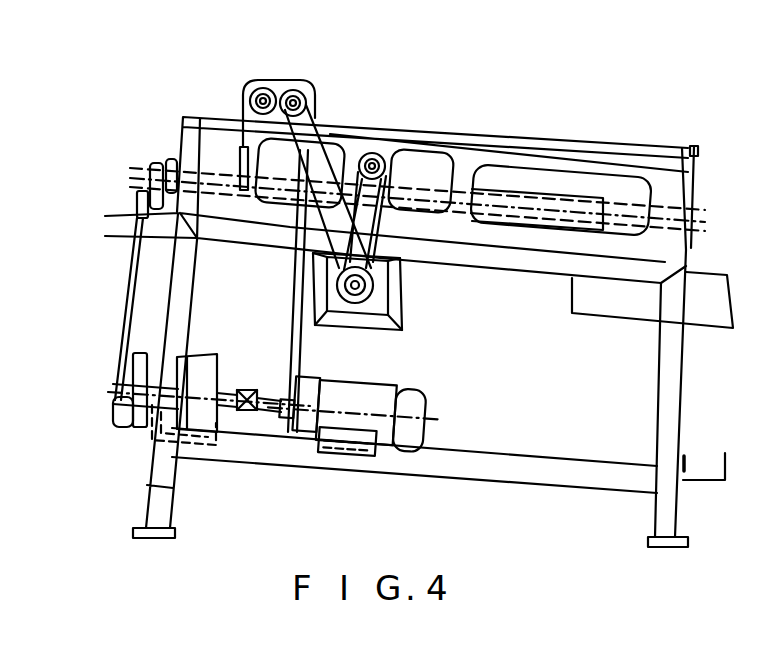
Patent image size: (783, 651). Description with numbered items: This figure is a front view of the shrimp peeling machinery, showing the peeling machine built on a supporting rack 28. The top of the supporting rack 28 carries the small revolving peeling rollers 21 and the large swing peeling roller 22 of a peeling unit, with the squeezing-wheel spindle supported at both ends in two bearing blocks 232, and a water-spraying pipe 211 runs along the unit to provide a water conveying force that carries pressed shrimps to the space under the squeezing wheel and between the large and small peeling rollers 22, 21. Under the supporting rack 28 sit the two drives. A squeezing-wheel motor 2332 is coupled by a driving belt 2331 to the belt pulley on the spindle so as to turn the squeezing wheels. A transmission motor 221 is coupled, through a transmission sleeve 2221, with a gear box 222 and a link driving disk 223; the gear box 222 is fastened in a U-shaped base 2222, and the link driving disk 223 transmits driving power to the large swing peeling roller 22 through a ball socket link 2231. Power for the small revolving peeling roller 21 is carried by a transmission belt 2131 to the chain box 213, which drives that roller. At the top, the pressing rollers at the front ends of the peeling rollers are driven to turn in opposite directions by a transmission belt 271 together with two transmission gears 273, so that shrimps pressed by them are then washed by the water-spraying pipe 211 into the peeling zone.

The small revolving peeling roller 21 is at (563, 195).
The water-spraying pipe 211 is at (538, 140).
The chain box 213 is at (242, 150).
The transmission belt 2131 is at (215, 210).
The large swing peeling roller 22 is at (580, 227).
The transmission motor 221 is at (300, 375).
The transmission sleeve 2221 is at (247, 413).
The gear box 222 is at (180, 358).
The U-shaped base 2222 is at (190, 443).
The link driving disk 223 is at (123, 372).
The ball socket link 2231 is at (140, 245).
The bearing block 232 is at (378, 155).
The driving belt 2331 is at (388, 252).
The squeezing-wheel motor 2332 is at (333, 272).
The transmission belt 271 is at (343, 132).
The transmission gear 273 is at (303, 92).
The supporting rack 28 is at (680, 387).